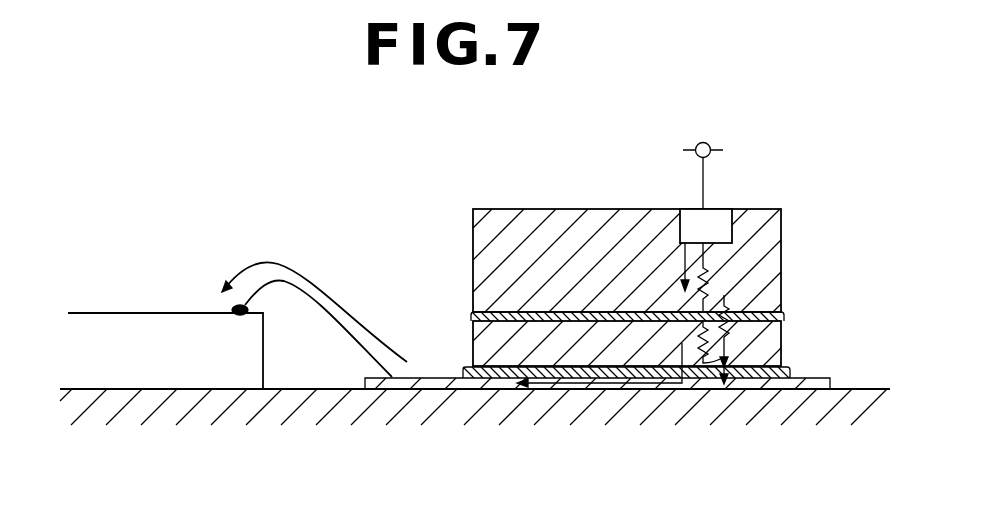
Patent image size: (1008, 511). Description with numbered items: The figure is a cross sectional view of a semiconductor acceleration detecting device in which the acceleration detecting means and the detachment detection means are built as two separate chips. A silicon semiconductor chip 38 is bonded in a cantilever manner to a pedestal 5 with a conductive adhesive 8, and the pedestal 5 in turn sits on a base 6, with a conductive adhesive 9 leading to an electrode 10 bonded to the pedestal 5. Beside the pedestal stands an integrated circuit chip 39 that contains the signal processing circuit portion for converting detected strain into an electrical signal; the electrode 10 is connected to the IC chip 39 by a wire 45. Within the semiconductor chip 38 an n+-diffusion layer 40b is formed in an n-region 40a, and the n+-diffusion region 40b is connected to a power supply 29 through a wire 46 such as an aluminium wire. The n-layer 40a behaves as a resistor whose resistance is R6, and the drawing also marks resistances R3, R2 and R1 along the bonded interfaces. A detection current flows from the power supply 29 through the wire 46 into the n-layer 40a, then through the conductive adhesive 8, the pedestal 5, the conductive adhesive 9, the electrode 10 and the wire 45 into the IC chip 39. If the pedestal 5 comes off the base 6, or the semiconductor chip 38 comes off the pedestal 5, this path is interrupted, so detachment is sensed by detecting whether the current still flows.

The integrated circuit chip 39 is at (132, 337).
The wire 45 is at (313, 288).
The n-region 40a is at (508, 235).
The n+-diffusion layer 40b is at (690, 218).
The power supply 29 is at (712, 144).
The wire 46 is at (706, 176).
The semiconductor chip 38 is at (664, 226).
The conductive adhesive 8 is at (784, 316).
The pedestal 5 is at (782, 346).
The conductive adhesive 9 is at (788, 372).
The electrode 10 is at (810, 385).
The base 6 is at (660, 412).
The resistance R1 is at (742, 389).
The resistance R2 is at (708, 372).
The resistance R3 is at (740, 325).
The resistance of n-layer R6 is at (711, 277).